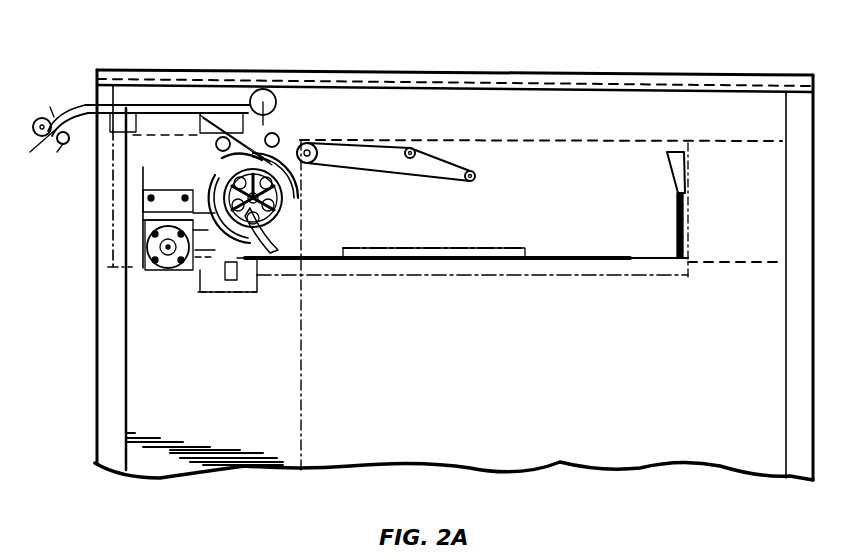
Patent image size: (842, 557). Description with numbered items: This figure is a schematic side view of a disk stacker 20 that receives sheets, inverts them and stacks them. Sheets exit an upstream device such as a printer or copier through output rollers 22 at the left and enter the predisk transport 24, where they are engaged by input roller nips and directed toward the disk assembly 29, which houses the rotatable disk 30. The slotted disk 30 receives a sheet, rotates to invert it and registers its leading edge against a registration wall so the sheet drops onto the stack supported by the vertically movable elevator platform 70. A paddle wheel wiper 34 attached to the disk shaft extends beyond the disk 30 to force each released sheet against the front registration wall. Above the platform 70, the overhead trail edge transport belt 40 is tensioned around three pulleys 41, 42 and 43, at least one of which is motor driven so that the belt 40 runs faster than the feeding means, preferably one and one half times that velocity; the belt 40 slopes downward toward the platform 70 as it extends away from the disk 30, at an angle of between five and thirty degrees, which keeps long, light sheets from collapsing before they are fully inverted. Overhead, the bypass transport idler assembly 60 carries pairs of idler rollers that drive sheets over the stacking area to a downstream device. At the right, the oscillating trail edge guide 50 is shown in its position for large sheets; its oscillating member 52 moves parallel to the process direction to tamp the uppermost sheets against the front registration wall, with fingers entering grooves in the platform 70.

The disk stacker 20 is at (793, 76).
The output rollers 22 is at (63, 148).
The predisk transport 24 is at (188, 105).
The disk assembly 29 is at (162, 153).
The rotatable disk 30 is at (302, 195).
The wiper 34 is at (268, 260).
The trail edge transport belt 40 is at (353, 143).
The pulley 41 is at (307, 140).
The pulley 42 is at (410, 146).
The pulley 43 is at (470, 168).
The trail edge guide 50 is at (672, 160).
The oscillating member 52 is at (686, 222).
The bypass transport idler assembly 60 is at (538, 115).
The elevator platform 70 is at (560, 280).